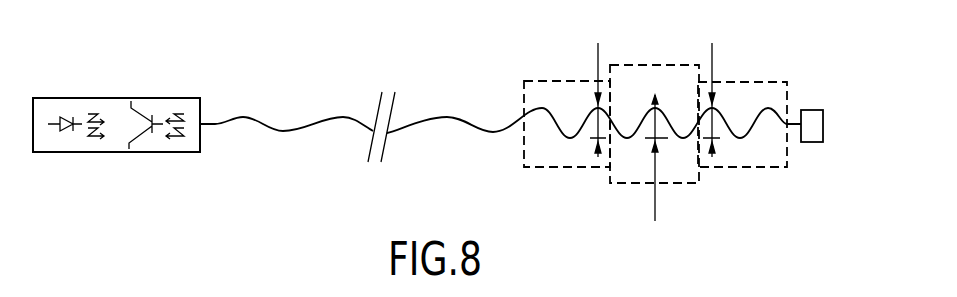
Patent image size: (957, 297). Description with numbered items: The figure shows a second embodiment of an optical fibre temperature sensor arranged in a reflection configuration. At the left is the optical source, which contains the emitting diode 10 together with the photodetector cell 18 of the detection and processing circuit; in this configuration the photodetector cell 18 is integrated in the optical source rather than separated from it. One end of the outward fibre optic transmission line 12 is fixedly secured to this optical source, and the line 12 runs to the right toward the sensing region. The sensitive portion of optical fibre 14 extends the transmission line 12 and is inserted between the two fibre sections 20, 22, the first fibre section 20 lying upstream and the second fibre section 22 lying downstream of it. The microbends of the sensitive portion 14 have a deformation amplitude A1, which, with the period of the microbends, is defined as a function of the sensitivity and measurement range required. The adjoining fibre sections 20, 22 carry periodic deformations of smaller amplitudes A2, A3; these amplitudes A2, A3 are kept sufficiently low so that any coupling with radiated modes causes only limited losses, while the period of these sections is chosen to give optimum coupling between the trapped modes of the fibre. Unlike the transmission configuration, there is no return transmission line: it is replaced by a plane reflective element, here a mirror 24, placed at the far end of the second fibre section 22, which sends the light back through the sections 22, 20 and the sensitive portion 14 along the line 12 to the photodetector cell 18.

The emitting diode 10 is at (63, 116).
The photodetector cell 18 is at (153, 112).
The outward fibre optic transmission line 12 is at (243, 115).
The sensitive portion of optical fibre 14 is at (652, 62).
The fibre section 20 is at (567, 169).
The fibre section 22 is at (744, 170).
The mirror 24 is at (808, 109).
The amplitude of the deformations of network A1 is at (655, 221).
The amplitude A2 is at (572, 43).
The amplitude A3 is at (740, 43).